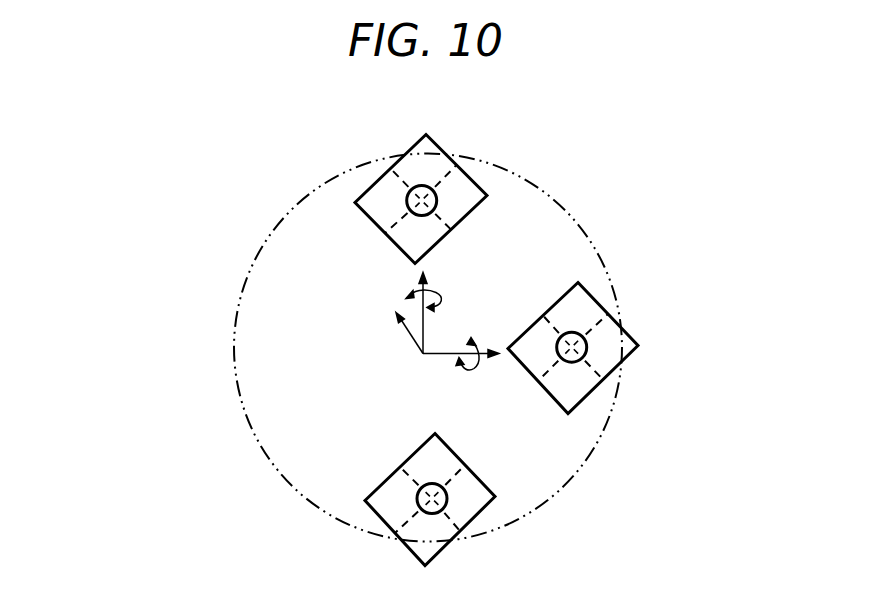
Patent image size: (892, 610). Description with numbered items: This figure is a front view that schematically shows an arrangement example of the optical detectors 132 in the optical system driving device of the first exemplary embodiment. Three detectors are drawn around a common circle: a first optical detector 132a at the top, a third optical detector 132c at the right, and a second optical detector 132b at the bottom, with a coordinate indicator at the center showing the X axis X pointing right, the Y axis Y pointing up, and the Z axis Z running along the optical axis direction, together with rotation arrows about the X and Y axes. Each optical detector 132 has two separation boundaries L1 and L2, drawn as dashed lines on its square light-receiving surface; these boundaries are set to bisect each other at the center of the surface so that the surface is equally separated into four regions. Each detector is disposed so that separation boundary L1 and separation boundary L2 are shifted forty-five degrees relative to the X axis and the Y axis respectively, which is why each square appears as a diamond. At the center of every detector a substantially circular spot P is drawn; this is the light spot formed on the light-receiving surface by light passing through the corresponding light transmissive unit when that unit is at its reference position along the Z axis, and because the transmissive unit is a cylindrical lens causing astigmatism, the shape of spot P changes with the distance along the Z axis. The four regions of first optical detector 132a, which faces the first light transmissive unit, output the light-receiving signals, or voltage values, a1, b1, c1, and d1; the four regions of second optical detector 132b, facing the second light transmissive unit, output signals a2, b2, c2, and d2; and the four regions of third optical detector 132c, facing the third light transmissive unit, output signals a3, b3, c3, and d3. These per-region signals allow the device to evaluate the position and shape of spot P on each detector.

The optical detector 132 is at (541, 363).
The first optical detector 132a is at (478, 184).
The second optical detector 132b is at (436, 557).
The third optical detector 132c is at (585, 398).
The separation boundary L1 is at (389, 165).
The separation boundary L2 is at (449, 176).
The spot P is at (437, 217).
The light-receiving signal a1 is at (390, 176).
The light-receiving signal b1 is at (450, 168).
The light-receiving signal c1 is at (391, 232).
The light-receiving signal d1 is at (451, 226).
The light-receiving signal a2 is at (400, 474).
The light-receiving signal b2 is at (459, 466).
The light-receiving signal c2 is at (402, 532).
The light-receiving signal d2 is at (460, 526).
The light-receiving signal a3 is at (543, 323).
The light-receiving signal b3 is at (601, 315).
The light-receiving signal c3 is at (545, 380).
The light-receiving signal d3 is at (603, 374).
The X axis X is at (463, 342).
The Y axis Y is at (430, 305).
The Z axis Z is at (402, 320).